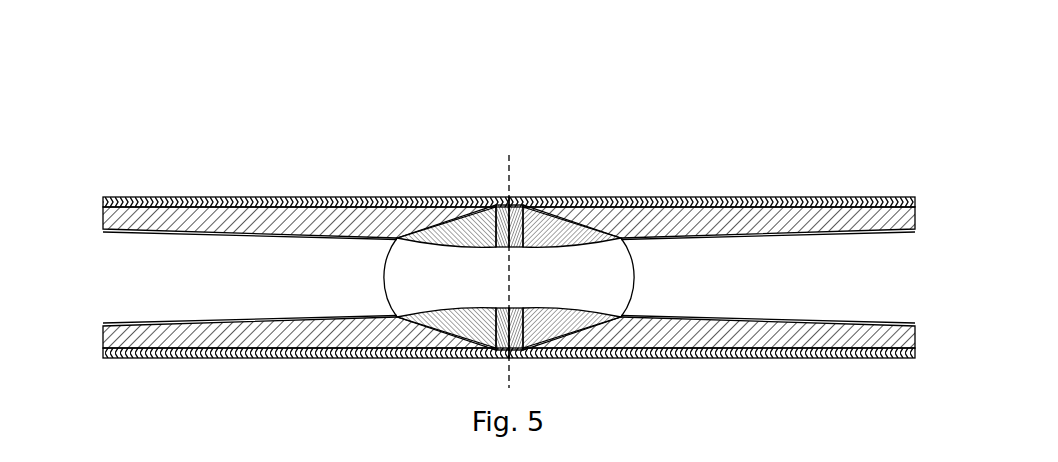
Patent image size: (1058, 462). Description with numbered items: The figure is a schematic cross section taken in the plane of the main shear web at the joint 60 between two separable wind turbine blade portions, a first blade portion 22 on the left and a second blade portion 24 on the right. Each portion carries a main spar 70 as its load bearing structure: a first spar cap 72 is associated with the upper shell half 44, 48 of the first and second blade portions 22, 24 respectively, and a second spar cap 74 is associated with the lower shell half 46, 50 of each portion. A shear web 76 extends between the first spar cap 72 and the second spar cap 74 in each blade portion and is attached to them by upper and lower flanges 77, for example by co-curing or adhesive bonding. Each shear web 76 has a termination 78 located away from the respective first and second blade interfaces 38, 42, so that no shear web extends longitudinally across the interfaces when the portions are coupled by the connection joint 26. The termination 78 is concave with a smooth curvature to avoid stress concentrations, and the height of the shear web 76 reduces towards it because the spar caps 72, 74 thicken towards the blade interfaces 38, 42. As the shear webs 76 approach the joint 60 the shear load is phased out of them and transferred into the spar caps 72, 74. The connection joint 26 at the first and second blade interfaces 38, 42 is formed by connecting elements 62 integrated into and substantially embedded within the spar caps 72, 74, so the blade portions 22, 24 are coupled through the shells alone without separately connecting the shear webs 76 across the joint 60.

The first blade portion 22 is at (306, 214).
The second blade portion 24 is at (712, 236).
The connection joint 26 is at (491, 311).
The first blade interface 38 is at (500, 187).
The second blade interface 42 is at (512, 187).
The upper shell half 44 is at (173, 200).
The lower shell half 46 is at (162, 354).
The upper shell half 48 is at (852, 197).
The lower shell half 50 is at (858, 355).
The joint 60 is at (514, 202).
The connecting elements 62 is at (470, 200).
The main spar 70 is at (481, 215).
The first spar cap 72 is at (284, 228).
The second spar cap 74 is at (294, 323).
The shear web 76 is at (166, 306).
The upper and lower flanges 77 is at (153, 231).
The termination 78 is at (386, 277).